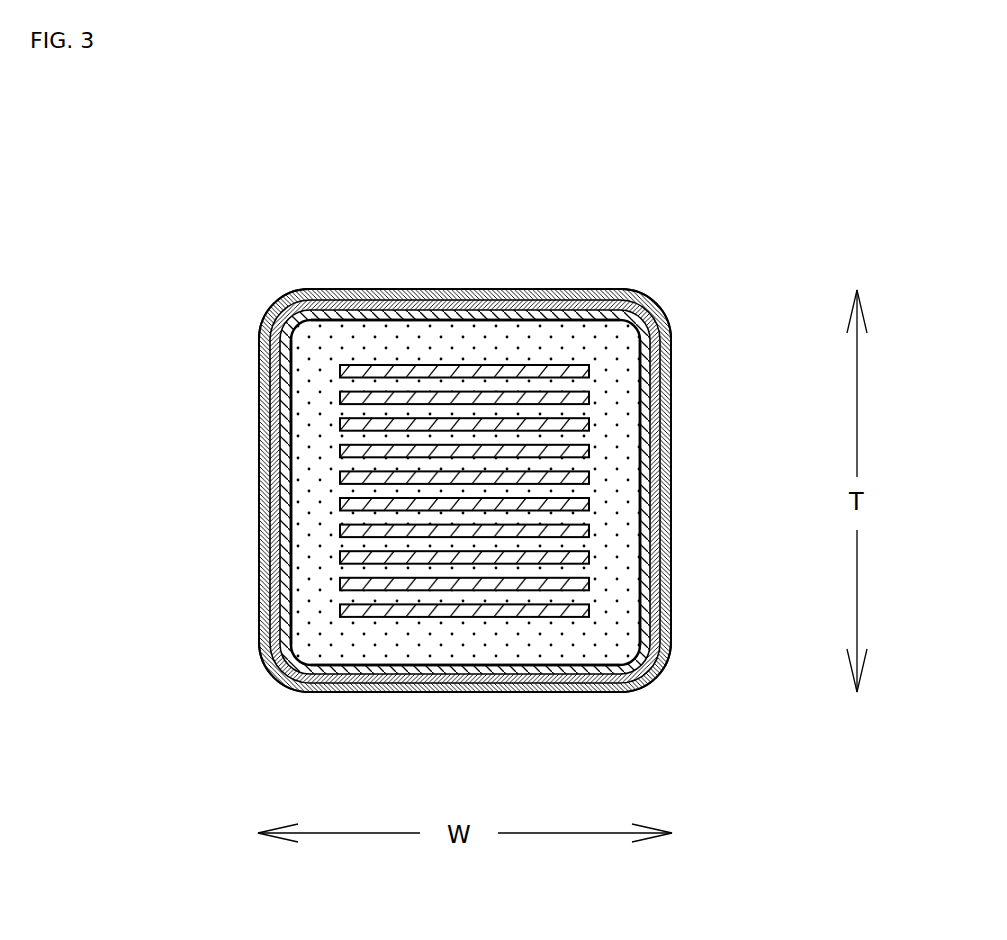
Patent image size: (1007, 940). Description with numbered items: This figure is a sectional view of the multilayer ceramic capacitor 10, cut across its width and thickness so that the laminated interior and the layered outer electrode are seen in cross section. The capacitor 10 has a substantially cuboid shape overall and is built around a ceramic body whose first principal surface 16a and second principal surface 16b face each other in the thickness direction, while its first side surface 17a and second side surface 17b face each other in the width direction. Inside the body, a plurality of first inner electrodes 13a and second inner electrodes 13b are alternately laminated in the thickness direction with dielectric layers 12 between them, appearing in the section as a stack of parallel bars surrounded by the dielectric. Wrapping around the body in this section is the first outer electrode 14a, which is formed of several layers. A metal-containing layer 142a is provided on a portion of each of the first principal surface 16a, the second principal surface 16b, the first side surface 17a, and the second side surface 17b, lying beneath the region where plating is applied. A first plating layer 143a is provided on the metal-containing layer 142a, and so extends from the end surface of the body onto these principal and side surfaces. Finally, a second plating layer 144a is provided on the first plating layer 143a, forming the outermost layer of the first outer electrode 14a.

The multilayer ceramic capacitor 10 is at (433, 422).
The dielectric layers 12 is at (472, 413).
The first inner electrodes 13a is at (557, 418).
The second inner electrodes 13b is at (542, 563).
The first outer electrode 14a is at (258, 328).
The metal-containing layer 142a is at (277, 387).
The first plating layer 143a is at (265, 437).
The second plating layer 144a is at (255, 492).
The first principal surface 16a is at (342, 318).
The second principal surface 16b is at (402, 664).
The first side surface 17a is at (288, 560).
The second side surface 17b is at (640, 383).